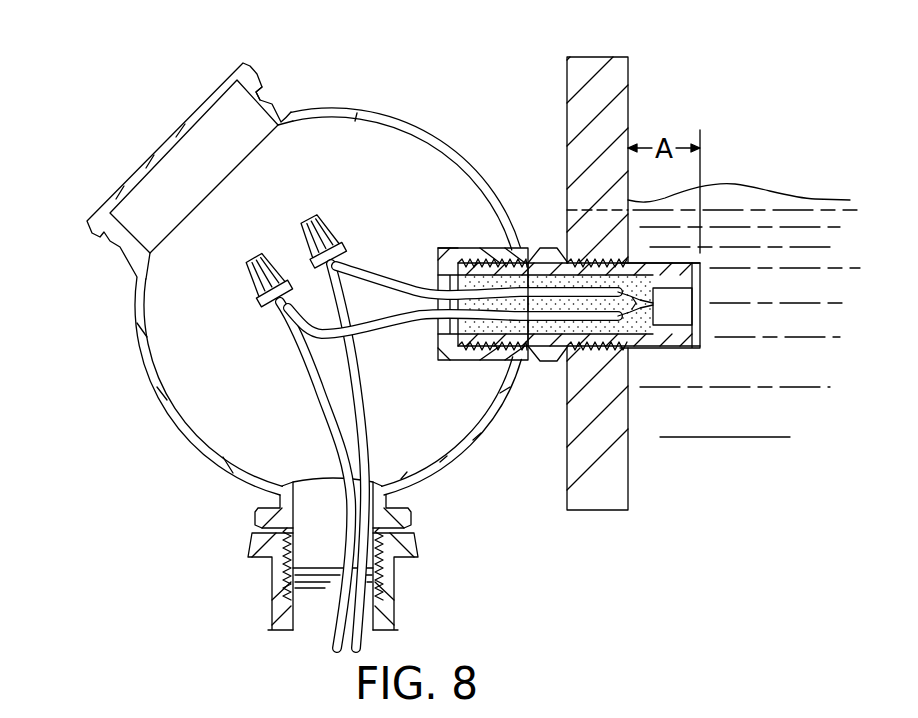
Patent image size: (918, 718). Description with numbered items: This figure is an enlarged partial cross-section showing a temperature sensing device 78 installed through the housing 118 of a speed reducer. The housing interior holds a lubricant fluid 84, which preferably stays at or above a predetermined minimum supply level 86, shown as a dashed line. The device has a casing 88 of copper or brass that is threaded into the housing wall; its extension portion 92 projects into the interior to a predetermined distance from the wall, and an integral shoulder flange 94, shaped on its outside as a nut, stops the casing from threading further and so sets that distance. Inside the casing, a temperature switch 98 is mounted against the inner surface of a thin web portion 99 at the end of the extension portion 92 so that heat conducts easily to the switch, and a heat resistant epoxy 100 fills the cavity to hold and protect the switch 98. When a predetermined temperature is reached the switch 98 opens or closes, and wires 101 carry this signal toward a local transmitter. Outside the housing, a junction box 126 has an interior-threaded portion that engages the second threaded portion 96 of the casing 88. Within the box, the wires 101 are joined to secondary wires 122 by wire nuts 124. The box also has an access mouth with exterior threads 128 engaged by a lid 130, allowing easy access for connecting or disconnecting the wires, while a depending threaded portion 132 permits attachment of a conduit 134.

The temperature sensing device 78 is at (478, 95).
The lubricant fluid 84 is at (807, 198).
The predetermined minimum lubricant supply level 86 is at (590, 212).
The casing 88 is at (538, 233).
The extension portion 92 is at (666, 350).
The shoulder flange 94 is at (558, 362).
The second threaded portion 96 is at (457, 348).
The temperature switch 98 is at (700, 350).
The web portion 99 is at (682, 313).
The heat resistant epoxy 100 is at (460, 327).
The wires 101 is at (390, 297).
The housing 118 is at (567, 100).
The secondary wires 122 is at (353, 381).
The wire nuts 124 is at (300, 229).
The junction box 126 is at (168, 413).
The threads 128 is at (266, 92).
The lid 130 is at (188, 118).
The depending threaded portion 132 is at (253, 522).
The conduit 134 is at (272, 618).